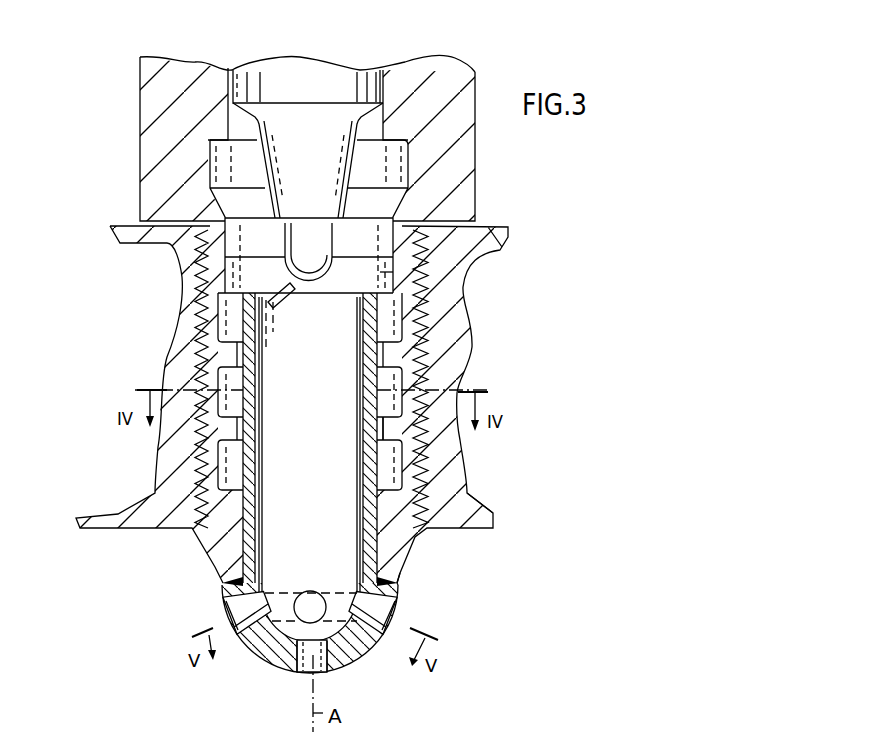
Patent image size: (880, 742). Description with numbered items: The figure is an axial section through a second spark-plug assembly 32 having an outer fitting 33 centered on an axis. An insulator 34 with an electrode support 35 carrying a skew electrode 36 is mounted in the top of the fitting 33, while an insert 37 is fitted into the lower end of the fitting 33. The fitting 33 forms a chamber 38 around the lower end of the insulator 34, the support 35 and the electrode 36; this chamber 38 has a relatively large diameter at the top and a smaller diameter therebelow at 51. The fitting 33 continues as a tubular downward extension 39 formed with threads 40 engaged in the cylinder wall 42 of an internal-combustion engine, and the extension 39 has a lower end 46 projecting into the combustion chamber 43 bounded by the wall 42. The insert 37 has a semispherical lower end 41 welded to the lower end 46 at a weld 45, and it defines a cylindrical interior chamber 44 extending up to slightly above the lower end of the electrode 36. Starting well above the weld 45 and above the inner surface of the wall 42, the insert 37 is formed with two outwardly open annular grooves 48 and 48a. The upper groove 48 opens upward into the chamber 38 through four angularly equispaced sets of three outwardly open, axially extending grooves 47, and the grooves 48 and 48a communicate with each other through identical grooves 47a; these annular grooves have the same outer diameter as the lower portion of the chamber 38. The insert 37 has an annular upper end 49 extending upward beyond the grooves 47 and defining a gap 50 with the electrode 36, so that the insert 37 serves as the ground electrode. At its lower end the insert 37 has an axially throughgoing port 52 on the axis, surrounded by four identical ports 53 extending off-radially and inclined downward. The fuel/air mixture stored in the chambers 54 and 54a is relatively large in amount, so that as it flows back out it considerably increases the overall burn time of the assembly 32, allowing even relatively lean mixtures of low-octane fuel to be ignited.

The spark-plug assembly 32 is at (527, 293).
The outer fitting 33 is at (465, 179).
The insulator 34 is at (362, 80).
The electrode support 35 is at (322, 242).
The skew electrode 36 is at (292, 302).
The insert 37 is at (350, 535).
The chamber 38 is at (400, 154).
The tubular downward extension 39 is at (392, 327).
The threads 40 is at (467, 508).
The semispherical lower end 41 is at (347, 660).
The cylinder wall 42 is at (125, 512).
The combustion chamber 43 is at (158, 571).
The cylindrical interior chamber 44 is at (385, 537).
The weld 45 is at (398, 584).
The lower end of extension 46 is at (397, 567).
The axially extending grooves 47 is at (238, 342).
The axially extending grooves 47a is at (397, 464).
The upper annular groove 48 is at (397, 362).
The lower annular groove 48a is at (385, 427).
The annular upper end 49 is at (243, 298).
The gap 50 is at (268, 300).
The smaller-diameter chamber portion 51 is at (382, 272).
The axially throughgoing port 52 is at (308, 672).
The off-radial ports 53 is at (232, 612).
The chamber 54 is at (385, 404).
The chamber 54a is at (445, 477).